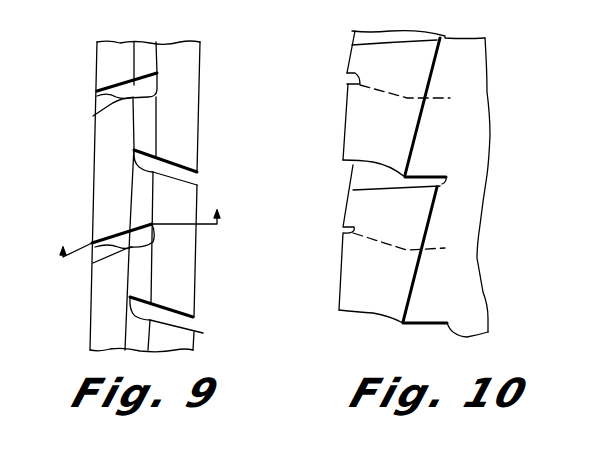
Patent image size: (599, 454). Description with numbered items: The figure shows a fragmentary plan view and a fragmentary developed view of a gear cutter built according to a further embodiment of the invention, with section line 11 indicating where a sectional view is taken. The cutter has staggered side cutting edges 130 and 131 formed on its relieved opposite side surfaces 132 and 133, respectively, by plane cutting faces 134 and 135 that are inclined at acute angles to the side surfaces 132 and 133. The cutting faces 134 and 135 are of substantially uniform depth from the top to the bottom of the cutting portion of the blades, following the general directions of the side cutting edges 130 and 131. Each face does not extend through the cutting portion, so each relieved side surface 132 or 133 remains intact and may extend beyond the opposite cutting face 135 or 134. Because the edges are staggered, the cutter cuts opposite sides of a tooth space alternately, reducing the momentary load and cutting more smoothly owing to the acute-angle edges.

In FIG. 9, the section line 11 is at (141, 224).
In FIG. 9, the side cutting edge 130 is at (114, 91).
In FIG. 10, the side cutting edge 130 is at (400, 235).
In FIG. 9, the side cutting edge 131 is at (175, 160).
In FIG. 10, the side cutting edge 131 is at (345, 162).
In FIG. 9, the relieved side surface 132 is at (105, 161).
In FIG. 9, the relieved side surface 133 is at (182, 262).
In FIG. 10, the relieved side surface 133 is at (397, 298).
In FIG. 9, the plane cutting face 134 is at (96, 105).
In FIG. 9, the plane cutting face 135 is at (194, 328).
In FIG. 10, the plane cutting face 135 is at (368, 167).